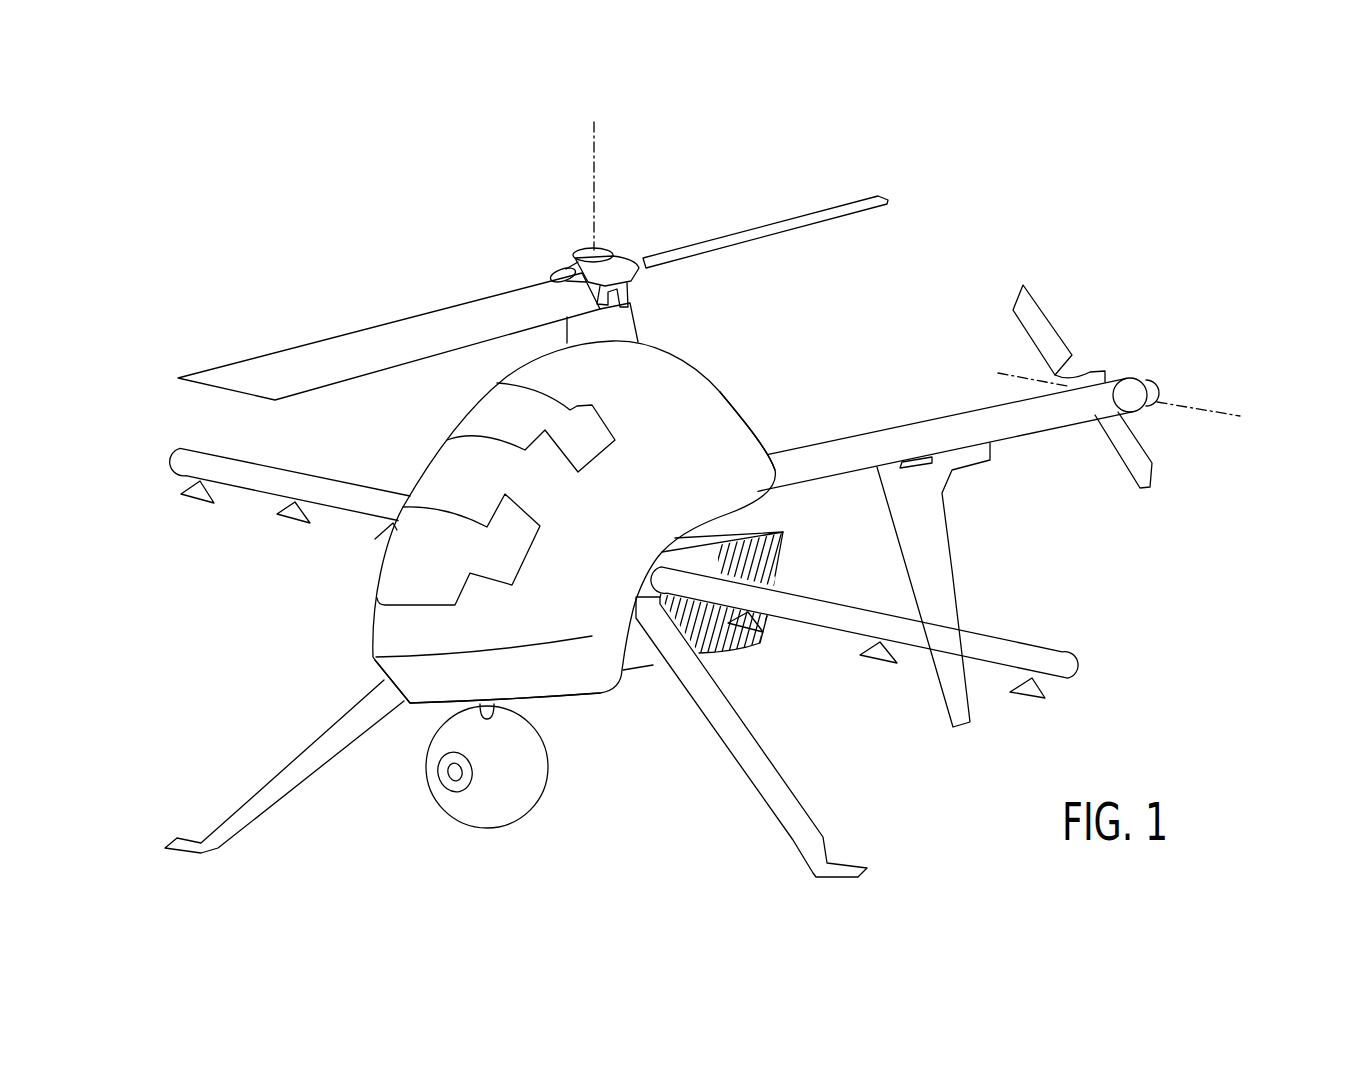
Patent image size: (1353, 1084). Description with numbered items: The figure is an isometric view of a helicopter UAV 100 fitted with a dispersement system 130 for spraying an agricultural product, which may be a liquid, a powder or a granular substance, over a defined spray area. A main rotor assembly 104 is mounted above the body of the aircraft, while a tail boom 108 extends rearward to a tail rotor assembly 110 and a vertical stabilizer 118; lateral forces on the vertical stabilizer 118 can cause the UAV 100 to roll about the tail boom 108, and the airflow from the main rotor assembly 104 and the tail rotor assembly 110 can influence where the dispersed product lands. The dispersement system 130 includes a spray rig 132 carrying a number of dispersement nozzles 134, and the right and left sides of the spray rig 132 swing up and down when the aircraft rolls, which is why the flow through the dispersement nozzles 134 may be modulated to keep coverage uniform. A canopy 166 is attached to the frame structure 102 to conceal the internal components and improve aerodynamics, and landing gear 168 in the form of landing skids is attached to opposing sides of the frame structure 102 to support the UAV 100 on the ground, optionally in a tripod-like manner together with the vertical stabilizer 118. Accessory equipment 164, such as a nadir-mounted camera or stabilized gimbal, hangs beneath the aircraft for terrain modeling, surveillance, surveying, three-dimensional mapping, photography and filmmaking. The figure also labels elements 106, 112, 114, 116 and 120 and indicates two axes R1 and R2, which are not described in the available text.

The UAV 100 is at (366, 202).
The frame structure 102 is at (650, 670).
The main rotor assembly 104 is at (628, 279).
The main rotor blade 106 is at (283, 351).
The tail boom 108 is at (857, 436).
The tail rotor assembly 110 is at (1043, 305).
The tail rotor blade 112 is at (1152, 463).
The fuselage upper portion 114 is at (800, 447).
The tail rotor shaft 116 is at (1082, 413).
The vertical stabilizer 118 is at (952, 558).
The main rotor 120 is at (752, 202).
The dispersement system 130 is at (243, 599).
The spray rig 132 is at (248, 493).
The dispersement nozzles 134 is at (878, 652).
The accessory equipment 164 is at (537, 800).
The canopy 166 is at (372, 632).
The landing gear 168 is at (297, 783).
The main rotor axis R1 is at (596, 186).
The tail rotor axis R2 is at (1200, 408).